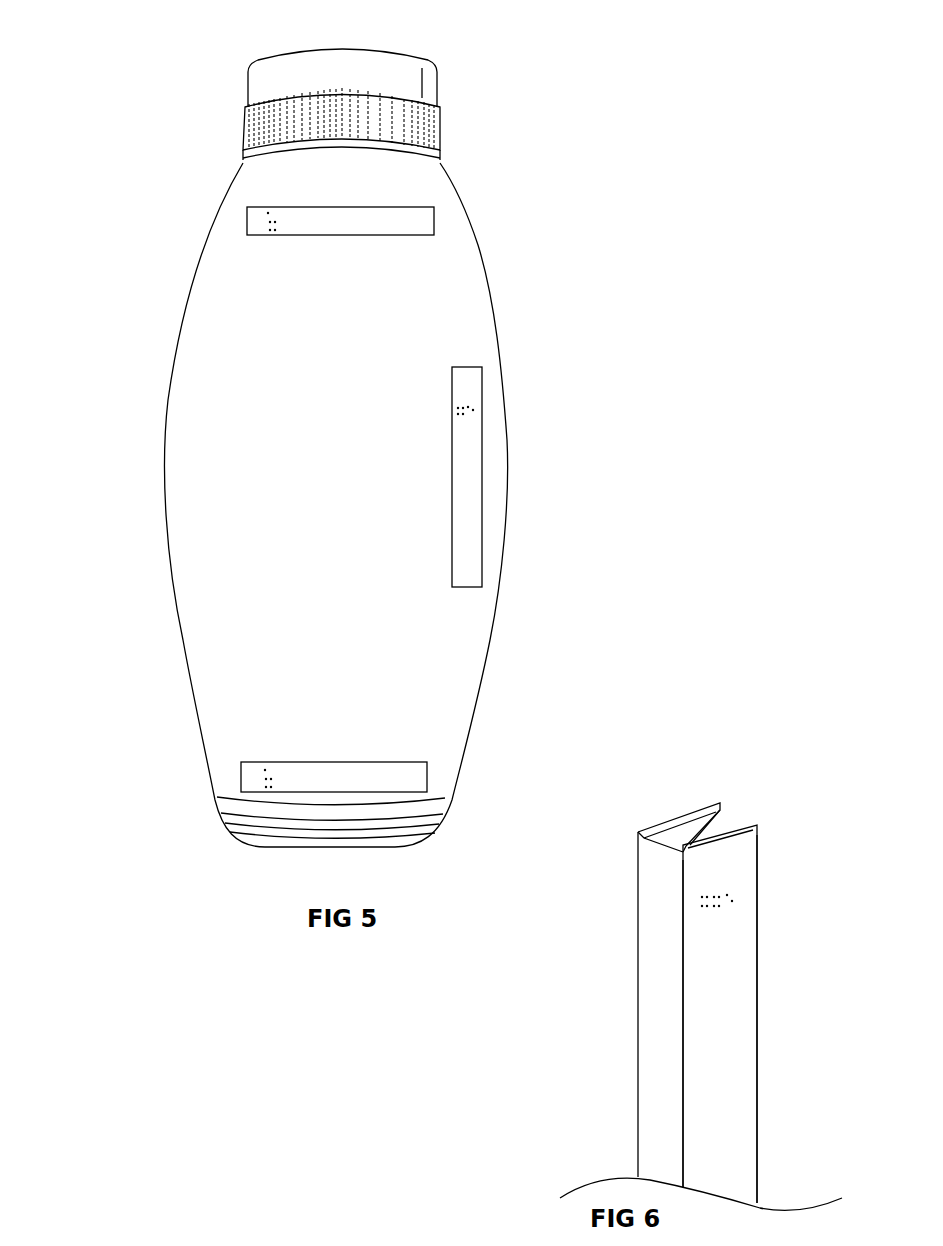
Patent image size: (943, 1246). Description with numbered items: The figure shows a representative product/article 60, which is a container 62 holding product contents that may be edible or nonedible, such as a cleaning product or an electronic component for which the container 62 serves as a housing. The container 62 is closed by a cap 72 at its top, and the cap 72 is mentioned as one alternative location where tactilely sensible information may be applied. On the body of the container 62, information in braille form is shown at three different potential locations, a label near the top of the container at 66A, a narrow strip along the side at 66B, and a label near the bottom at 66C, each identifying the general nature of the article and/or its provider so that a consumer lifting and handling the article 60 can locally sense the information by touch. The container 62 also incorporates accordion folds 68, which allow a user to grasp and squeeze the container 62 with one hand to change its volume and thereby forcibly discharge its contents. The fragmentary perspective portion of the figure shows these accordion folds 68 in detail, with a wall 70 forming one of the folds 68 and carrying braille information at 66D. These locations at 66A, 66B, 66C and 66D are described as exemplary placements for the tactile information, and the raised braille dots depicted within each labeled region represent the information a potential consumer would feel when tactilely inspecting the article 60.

In FIG. 5, the product/article 60 is at (379, 445).
In FIG. 5, the container 62 is at (223, 430).
In FIG. 5, the tactilely sensible information in braille form 66A is at (247, 778).
In FIG. 5, the tactilely sensible information in braille form 66B is at (470, 472).
In FIG. 5, the tactilely sensible information in braille form 66C is at (405, 228).
In FIG. 6, the tactilely sensible information in braille form 66D is at (727, 1037).
In FIG. 6, the accordion folds 68 is at (699, 1006).
In FIG. 6, the wall 70 is at (730, 883).
In FIG. 5, the cap 72 is at (382, 68).